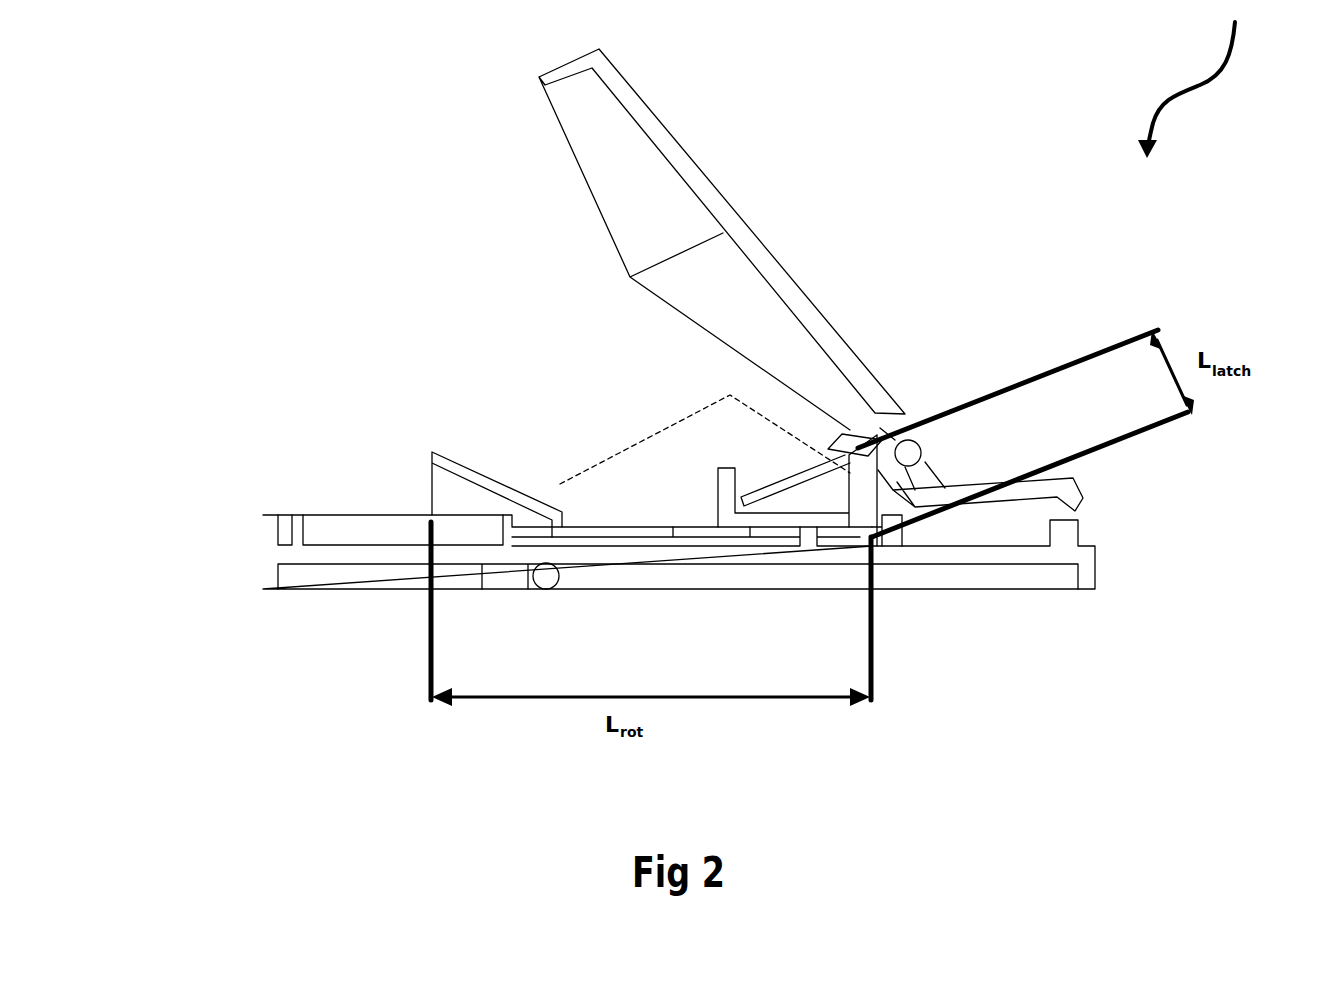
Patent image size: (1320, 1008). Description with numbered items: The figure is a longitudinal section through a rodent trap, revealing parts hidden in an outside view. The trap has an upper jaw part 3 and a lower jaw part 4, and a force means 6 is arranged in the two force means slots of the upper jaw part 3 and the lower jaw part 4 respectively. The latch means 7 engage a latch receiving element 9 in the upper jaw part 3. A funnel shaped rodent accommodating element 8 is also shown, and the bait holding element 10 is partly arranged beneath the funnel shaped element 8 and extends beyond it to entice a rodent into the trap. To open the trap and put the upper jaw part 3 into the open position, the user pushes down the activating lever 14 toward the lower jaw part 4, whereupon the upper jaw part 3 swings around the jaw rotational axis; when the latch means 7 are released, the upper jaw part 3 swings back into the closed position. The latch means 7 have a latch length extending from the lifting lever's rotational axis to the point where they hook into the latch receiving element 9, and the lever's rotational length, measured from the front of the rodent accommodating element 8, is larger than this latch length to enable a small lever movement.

The upper jaw part 3 is at (557, 57).
The lower jaw part 4 is at (262, 557).
The force means 6 is at (923, 453).
The latch means 7 is at (857, 433).
The funnel shaped rodent accommodating element 8 is at (482, 465).
The latch receiving element 9 is at (813, 465).
The bait holding element 10 is at (325, 513).
The activating lever 14 is at (1085, 502).